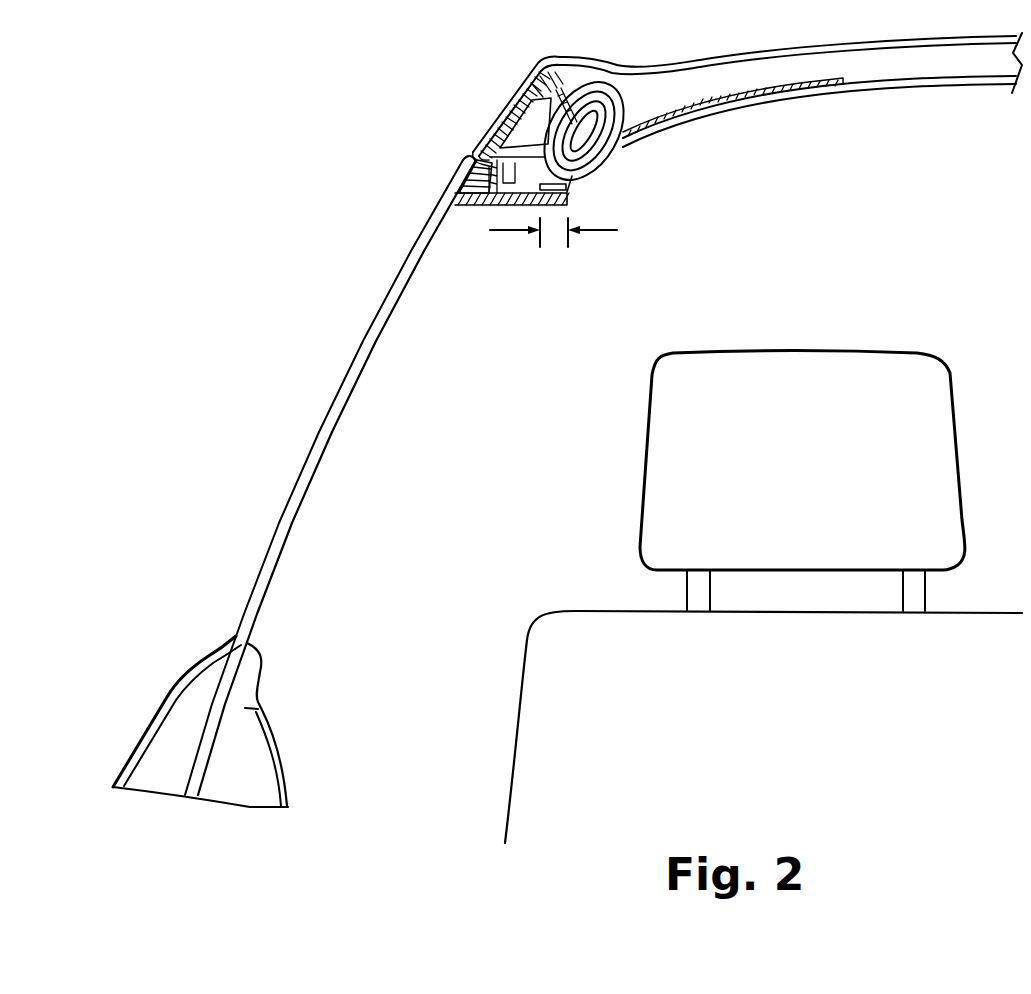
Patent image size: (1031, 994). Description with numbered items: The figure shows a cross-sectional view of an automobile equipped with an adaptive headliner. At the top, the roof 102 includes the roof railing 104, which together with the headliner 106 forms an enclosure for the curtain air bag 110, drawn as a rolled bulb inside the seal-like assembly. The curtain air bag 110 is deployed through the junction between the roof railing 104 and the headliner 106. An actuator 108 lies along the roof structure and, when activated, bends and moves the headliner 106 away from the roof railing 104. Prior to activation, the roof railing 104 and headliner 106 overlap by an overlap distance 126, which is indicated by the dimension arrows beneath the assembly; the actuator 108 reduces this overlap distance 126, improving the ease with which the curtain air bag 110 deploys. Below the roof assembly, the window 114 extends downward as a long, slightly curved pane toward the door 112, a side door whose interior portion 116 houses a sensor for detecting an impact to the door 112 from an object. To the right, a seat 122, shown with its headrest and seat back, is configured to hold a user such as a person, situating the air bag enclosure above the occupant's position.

The roof 102 is at (727, 58).
The roof railing 104 is at (466, 202).
The headliner 106 is at (597, 183).
The actuator 108 is at (733, 96).
The curtain air bag 110 is at (607, 90).
The door 112 is at (167, 700).
The window 114 is at (387, 310).
The interior portion 116 is at (245, 708).
The seat 122 is at (930, 388).
The overlap distance 126 is at (553, 248).